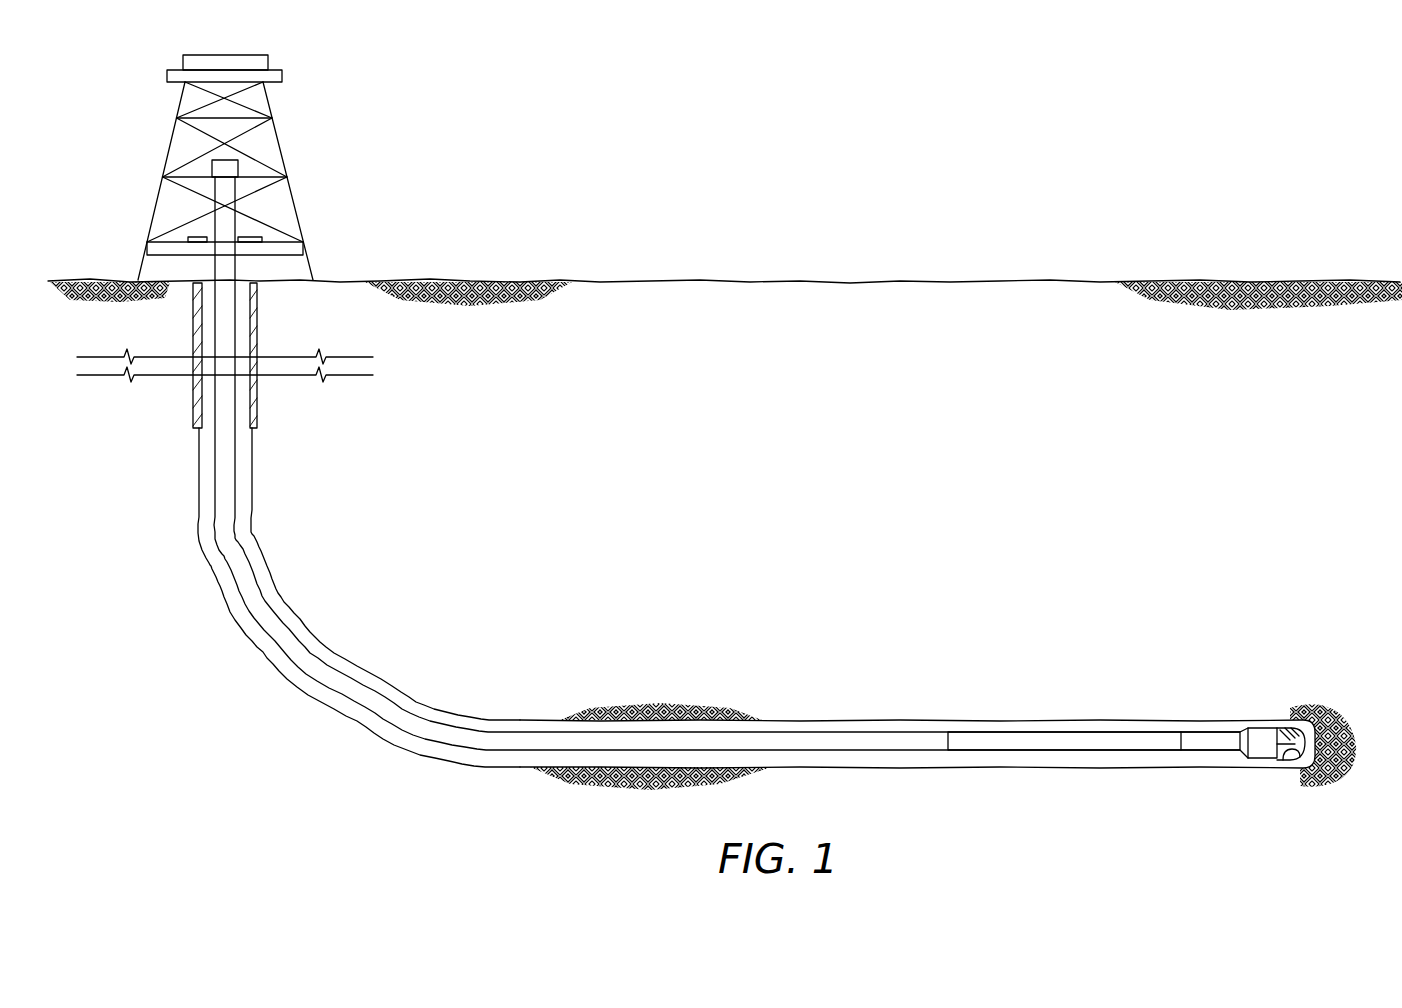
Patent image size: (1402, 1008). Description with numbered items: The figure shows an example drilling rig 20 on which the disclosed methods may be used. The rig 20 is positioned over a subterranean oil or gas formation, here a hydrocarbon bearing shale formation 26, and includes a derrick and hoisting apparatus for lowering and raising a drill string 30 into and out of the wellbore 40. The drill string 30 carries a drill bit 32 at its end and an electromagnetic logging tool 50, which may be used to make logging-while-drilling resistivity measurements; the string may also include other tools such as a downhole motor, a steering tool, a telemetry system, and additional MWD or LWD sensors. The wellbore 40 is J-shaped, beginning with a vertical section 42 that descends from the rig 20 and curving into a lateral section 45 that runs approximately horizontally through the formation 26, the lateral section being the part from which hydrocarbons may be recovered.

The drilling rig 20 is at (283, 148).
The vertical section 42 is at (258, 308).
The drill string 30 is at (226, 583).
The wellbore 40 is at (240, 638).
The lateral section 45 is at (793, 718).
The electromagnetic logging tool 50 is at (972, 732).
The hydrocarbon bearing shale formation 26 is at (1188, 687).
The drill bit 32 is at (1265, 722).